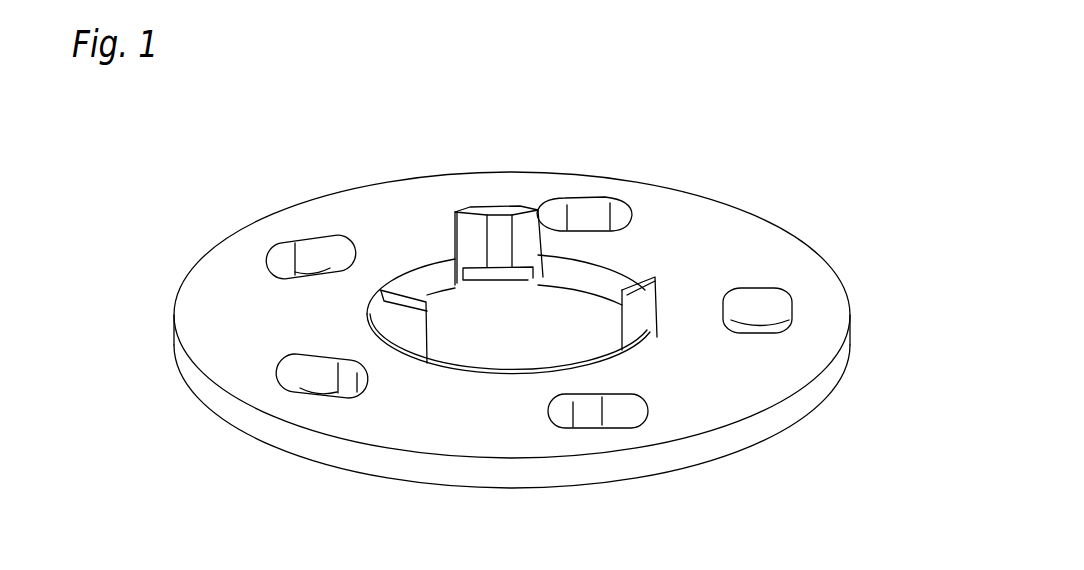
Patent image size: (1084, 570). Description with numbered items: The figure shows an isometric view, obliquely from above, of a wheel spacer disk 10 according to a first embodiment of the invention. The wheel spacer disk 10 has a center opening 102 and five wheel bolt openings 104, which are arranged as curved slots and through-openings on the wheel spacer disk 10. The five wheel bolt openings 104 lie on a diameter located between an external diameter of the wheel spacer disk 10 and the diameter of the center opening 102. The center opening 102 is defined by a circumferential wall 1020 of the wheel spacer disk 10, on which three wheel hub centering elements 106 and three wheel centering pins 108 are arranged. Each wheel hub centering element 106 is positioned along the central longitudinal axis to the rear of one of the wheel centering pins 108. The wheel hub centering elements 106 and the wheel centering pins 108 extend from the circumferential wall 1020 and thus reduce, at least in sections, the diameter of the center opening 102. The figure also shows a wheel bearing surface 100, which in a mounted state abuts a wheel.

The wheel spacer assembly 10 is at (746, 127).
The disc body 100 is at (368, 208).
The central receiving recess 102 is at (583, 272).
The hex nut 1020 is at (425, 275).
The bolt slots 104 is at (305, 252).
The inner cylindrical wall 106 is at (588, 338).
The protrusions 108 is at (501, 188).